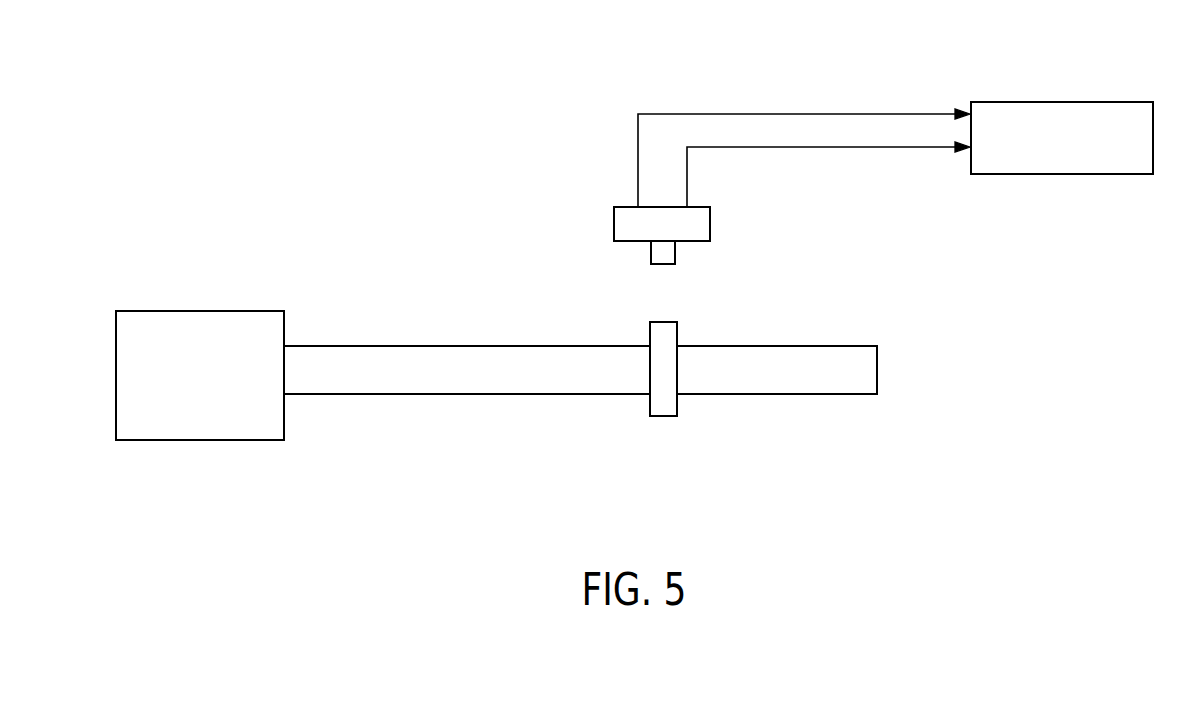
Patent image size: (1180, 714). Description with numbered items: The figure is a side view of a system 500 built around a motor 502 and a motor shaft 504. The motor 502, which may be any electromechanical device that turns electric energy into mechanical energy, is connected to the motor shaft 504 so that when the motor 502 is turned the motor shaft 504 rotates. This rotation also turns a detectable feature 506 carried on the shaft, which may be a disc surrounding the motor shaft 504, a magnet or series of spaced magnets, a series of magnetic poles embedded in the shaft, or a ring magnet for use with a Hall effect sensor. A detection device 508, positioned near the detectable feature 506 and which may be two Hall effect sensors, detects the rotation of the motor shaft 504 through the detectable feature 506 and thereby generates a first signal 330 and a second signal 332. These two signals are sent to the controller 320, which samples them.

The system 500 is at (150, 165).
The motor 502 is at (199, 311).
The motor shaft 504 is at (490, 395).
The detectable feature 506 is at (650, 322).
The detection device 508 is at (622, 207).
The first signal 330 is at (820, 113).
The second signal 332 is at (820, 148).
The controller 320 is at (1061, 102).